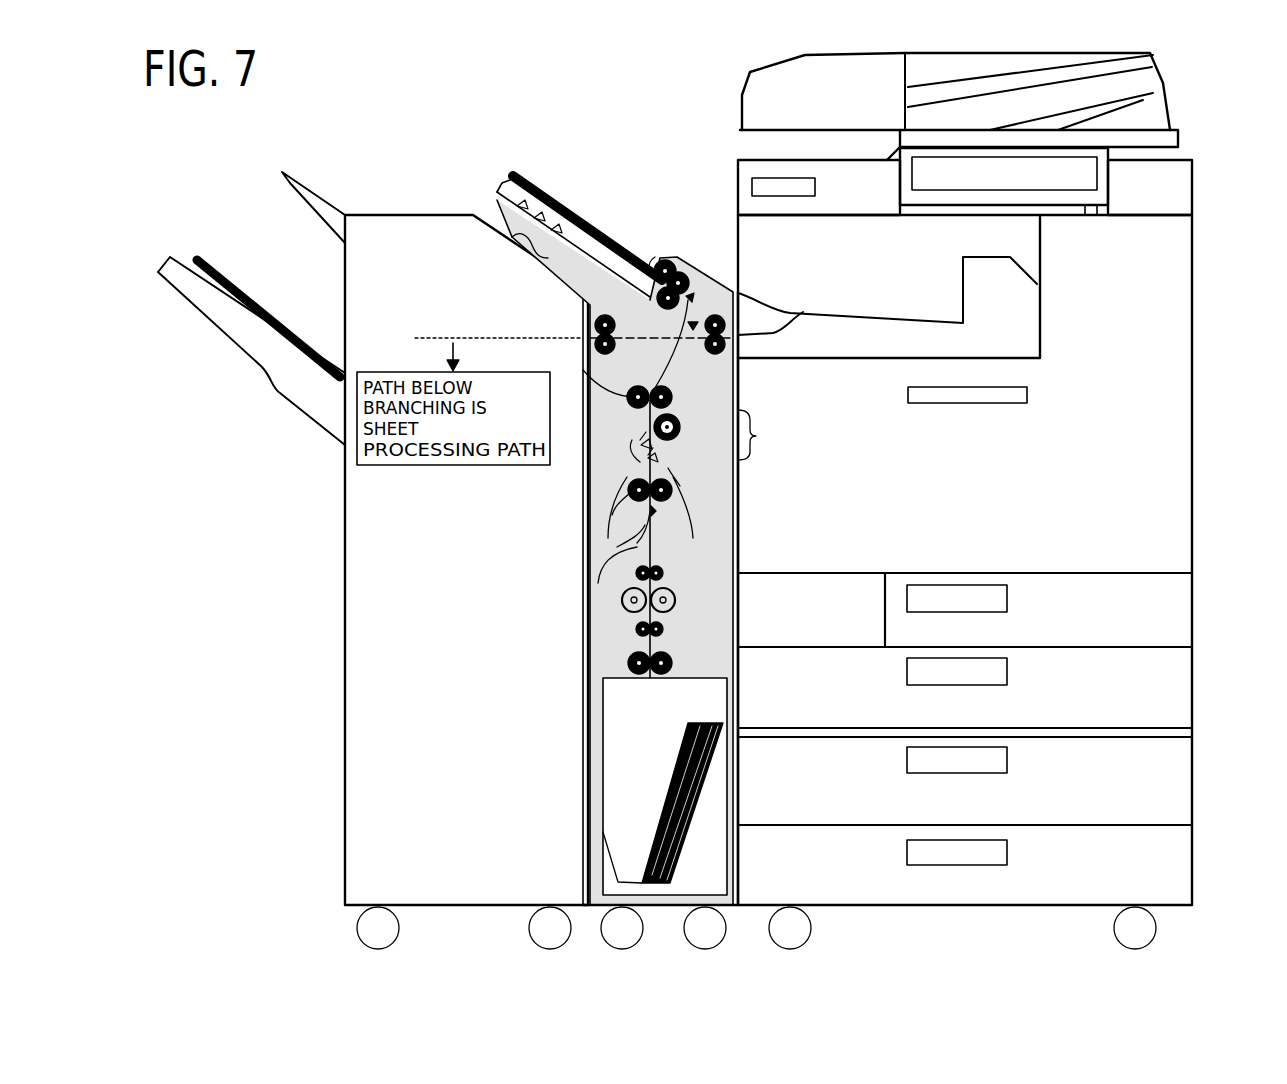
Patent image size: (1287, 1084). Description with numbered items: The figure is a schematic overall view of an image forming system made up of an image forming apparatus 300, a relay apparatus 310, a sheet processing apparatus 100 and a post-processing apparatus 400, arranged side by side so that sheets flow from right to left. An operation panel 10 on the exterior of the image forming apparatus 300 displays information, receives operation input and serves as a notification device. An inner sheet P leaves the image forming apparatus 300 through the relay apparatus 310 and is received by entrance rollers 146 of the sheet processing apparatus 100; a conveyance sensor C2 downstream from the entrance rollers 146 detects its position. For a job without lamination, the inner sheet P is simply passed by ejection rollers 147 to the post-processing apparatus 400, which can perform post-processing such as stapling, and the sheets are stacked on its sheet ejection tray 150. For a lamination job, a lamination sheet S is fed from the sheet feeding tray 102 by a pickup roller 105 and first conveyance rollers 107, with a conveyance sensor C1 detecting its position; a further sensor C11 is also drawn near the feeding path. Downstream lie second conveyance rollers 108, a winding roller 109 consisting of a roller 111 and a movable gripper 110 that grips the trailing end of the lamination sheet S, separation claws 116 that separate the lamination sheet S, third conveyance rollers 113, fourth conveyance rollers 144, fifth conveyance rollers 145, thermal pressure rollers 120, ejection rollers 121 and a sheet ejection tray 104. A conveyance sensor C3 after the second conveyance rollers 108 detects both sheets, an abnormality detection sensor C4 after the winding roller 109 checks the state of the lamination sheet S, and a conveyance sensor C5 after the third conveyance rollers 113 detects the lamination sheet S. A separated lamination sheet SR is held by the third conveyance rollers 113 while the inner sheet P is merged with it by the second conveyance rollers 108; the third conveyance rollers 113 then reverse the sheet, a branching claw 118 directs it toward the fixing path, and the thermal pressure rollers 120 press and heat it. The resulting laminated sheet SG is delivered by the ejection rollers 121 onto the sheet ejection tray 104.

The operation panel 10 is at (1077, 175).
The sheet processing apparatus 100 is at (733, 157).
The sheet feeding tray 102 is at (497, 192).
The sheet ejection tray 104 is at (705, 787).
The pickup roller 105 is at (657, 265).
The first conveyance rollers 107 is at (688, 262).
The second conveyance rollers 108 is at (587, 373).
The winding roller 109 is at (768, 436).
The gripper 110 is at (681, 418).
The roller 111 is at (678, 438).
The third conveyance rollers 113 is at (630, 493).
The separation claws 116 is at (640, 455).
The branching claw 118 is at (620, 548).
The thermal pressure rollers 120 is at (622, 600).
The ejection rollers 121 is at (628, 663).
The fourth conveyance rollers 144 is at (665, 573).
The fifth conveyance rollers 145 is at (665, 629).
The entrance rollers 146 is at (736, 355).
The ejection rollers 147 is at (590, 322).
The sheet ejection tray 150 is at (225, 338).
The image forming apparatus 300 is at (1173, 380).
The relay apparatus 310 is at (967, 292).
The post-processing apparatus 400 is at (407, 225).
The conveyance sensor C1 is at (694, 296).
The conveyance sensor C2 is at (693, 323).
The conveyance sensor C3 is at (665, 400).
The abnormality detection sensor C4 is at (674, 493).
The conveyance sensor C5 is at (672, 518).
The conveyance path C11 is at (522, 240).
The inner sheet P is at (773, 330).
The lamination sheet S is at (553, 195).
The lamination sheet in a separate state SR is at (733, 523).
The laminated sheet SG is at (670, 800).